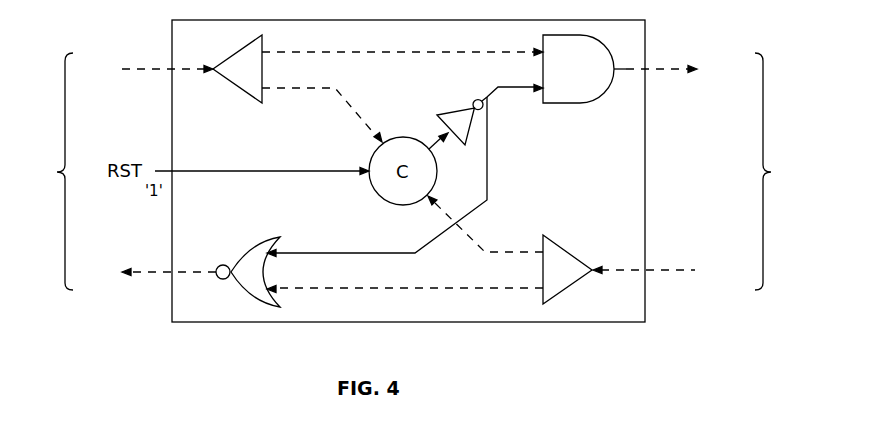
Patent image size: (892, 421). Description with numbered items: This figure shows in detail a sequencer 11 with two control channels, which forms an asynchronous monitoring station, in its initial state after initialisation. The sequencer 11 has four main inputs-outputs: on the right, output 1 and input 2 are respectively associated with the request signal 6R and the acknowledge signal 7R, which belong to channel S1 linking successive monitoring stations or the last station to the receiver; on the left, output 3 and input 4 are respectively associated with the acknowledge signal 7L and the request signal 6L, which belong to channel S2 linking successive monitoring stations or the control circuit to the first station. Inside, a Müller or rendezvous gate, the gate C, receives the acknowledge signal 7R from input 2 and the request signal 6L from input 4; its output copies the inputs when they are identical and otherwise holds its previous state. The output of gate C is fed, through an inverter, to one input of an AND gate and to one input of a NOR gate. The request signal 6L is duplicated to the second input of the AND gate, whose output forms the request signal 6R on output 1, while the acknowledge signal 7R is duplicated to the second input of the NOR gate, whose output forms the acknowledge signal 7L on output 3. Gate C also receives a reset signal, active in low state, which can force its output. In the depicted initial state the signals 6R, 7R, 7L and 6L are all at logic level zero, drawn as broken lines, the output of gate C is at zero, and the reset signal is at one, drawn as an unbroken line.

The output 1 is at (587, 68).
The input 2 is at (585, 272).
The output 3 is at (231, 273).
The input 4 is at (222, 69).
The sequencer 11 is at (647, 288).
The request signal 6L is at (147, 76).
The request signal 6R is at (673, 78).
The acknowledge signal 7L is at (149, 266).
The acknowledge signal 7R is at (662, 263).
The channel S1 is at (780, 171).
The channel S2 is at (46, 171).